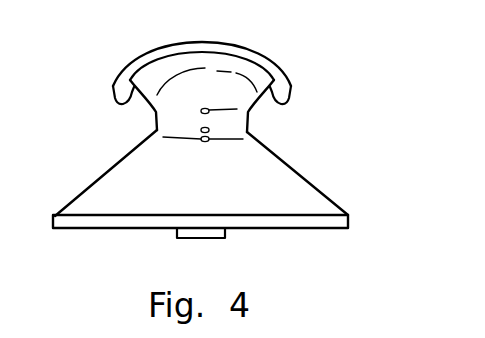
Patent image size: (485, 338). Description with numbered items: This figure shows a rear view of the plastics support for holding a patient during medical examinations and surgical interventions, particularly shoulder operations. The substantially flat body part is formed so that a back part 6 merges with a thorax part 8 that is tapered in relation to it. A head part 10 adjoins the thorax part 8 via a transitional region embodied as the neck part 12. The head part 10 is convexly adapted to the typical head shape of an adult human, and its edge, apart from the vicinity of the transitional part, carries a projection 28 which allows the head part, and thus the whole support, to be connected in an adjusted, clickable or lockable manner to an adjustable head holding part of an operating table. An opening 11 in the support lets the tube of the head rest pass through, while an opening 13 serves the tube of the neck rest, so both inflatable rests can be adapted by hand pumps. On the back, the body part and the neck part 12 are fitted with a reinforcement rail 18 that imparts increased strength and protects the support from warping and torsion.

The head part 10 is at (304, 55).
The projection 28 is at (116, 99).
The neck part 12 is at (286, 126).
The opening 11 is at (201, 111).
The opening 13 is at (201, 130).
The thorax part 8 is at (320, 177).
The back part 6 is at (375, 221).
The reinforcement rail 18 is at (203, 238).